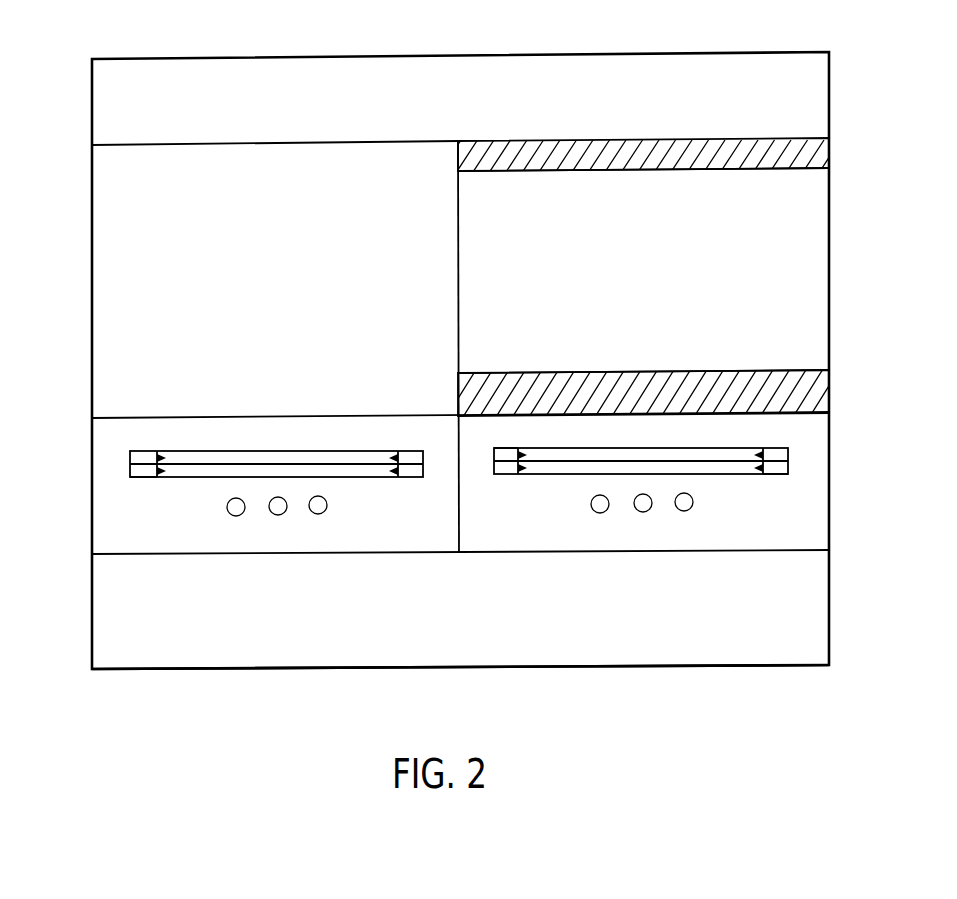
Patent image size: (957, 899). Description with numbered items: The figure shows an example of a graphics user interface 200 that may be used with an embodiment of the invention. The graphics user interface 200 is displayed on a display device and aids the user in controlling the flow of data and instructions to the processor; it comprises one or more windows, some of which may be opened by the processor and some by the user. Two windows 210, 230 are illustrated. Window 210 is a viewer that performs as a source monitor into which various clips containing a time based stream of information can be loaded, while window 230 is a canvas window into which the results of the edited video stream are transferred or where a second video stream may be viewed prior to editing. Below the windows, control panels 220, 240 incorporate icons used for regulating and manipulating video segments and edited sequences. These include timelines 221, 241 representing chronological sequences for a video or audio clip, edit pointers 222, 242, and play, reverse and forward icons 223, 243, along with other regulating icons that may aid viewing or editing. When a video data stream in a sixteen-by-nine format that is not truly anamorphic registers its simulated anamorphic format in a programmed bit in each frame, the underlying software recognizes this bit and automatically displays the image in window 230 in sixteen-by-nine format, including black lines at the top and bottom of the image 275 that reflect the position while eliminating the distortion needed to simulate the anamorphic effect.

The graphics user interface 200 is at (192, 58).
The window 210 is at (100, 412).
The control panel 220 is at (102, 545).
The timeline 221 is at (130, 467).
The edit pointer 222 is at (165, 480).
The play, reverse and forward icons 223 is at (242, 515).
The window 230 is at (815, 138).
The control panel 240 is at (817, 540).
The timeline 241 is at (497, 477).
The edit pointer 242 is at (527, 449).
The play, reverse and forward icons 243 is at (600, 513).
The black lines at the top and bottom of the image 275 is at (473, 141).